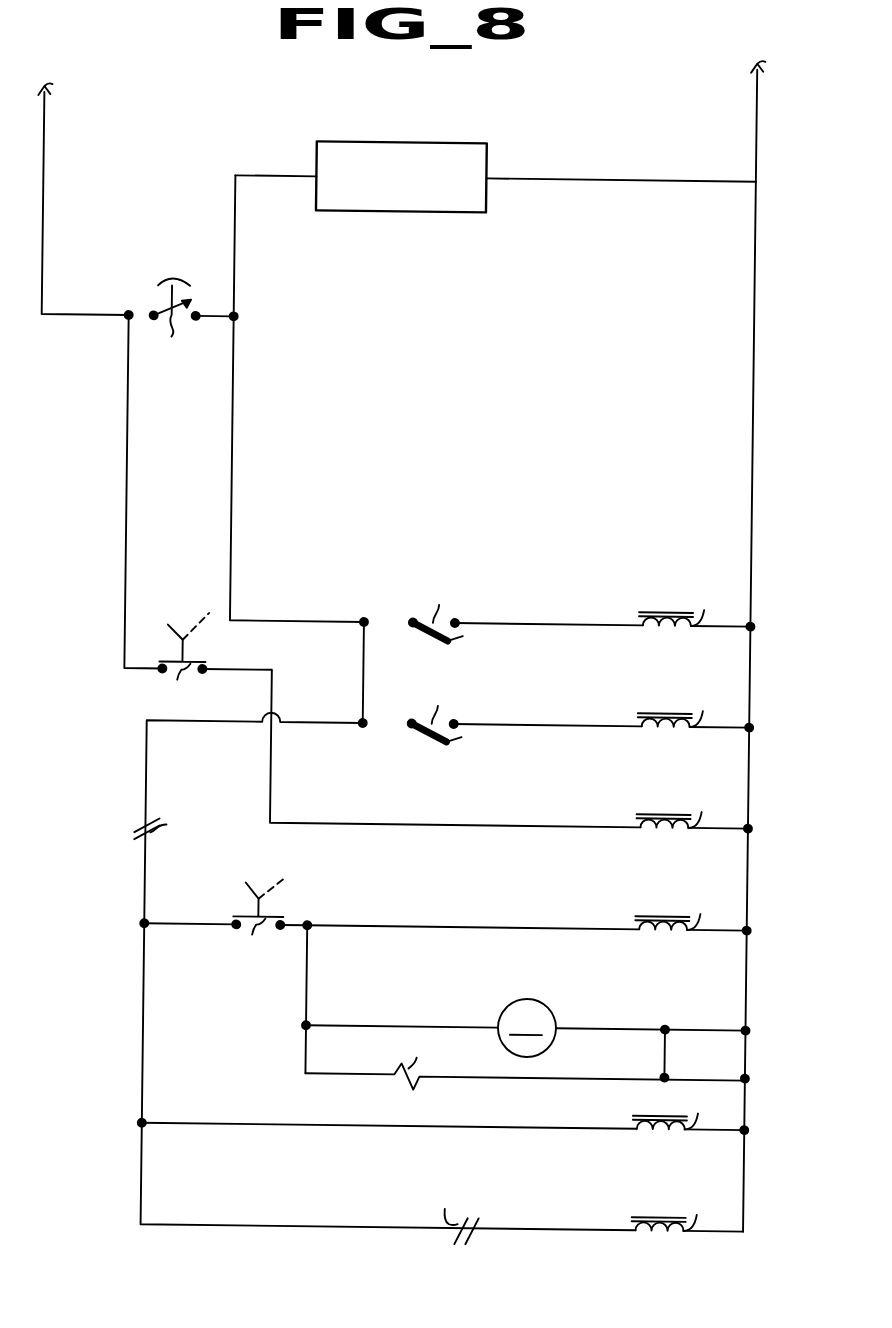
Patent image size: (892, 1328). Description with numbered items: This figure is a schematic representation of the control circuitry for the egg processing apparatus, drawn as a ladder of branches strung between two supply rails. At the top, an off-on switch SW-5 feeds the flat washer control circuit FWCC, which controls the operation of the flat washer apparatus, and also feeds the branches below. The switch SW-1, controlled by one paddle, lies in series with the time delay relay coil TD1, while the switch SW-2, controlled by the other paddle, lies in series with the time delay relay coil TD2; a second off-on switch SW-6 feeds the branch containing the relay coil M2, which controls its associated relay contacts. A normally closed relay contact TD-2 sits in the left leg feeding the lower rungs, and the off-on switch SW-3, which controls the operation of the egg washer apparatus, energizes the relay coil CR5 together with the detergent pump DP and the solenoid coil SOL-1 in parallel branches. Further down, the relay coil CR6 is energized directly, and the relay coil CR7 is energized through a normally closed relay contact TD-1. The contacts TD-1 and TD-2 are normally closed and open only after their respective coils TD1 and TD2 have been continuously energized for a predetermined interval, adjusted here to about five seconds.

The off-on switch SW-5 is at (181, 316).
The off-on switch SW-6 is at (392, 719).
The switch SW-1 is at (501, 654).
The switch SW-2 is at (500, 714).
The off-on switch SW-3 is at (224, 974).
The time delay relay coil TD1 is at (697, 605).
The time delay relay coil TD2 is at (696, 706).
The relay coil M2 is at (694, 807).
The relay coil CR5 is at (529, 907).
The relay coil CR6 is at (443, 1107).
The relay coil CR7 is at (688, 1209).
The relay contact TD-2 is at (175, 820).
The relay contact TD-1 is at (450, 1216).
The solenoid coil SOL-1 is at (527, 1063).
The detergent pump DP is at (525, 1037).
The flat washer control circuit FWCC is at (495, 177).